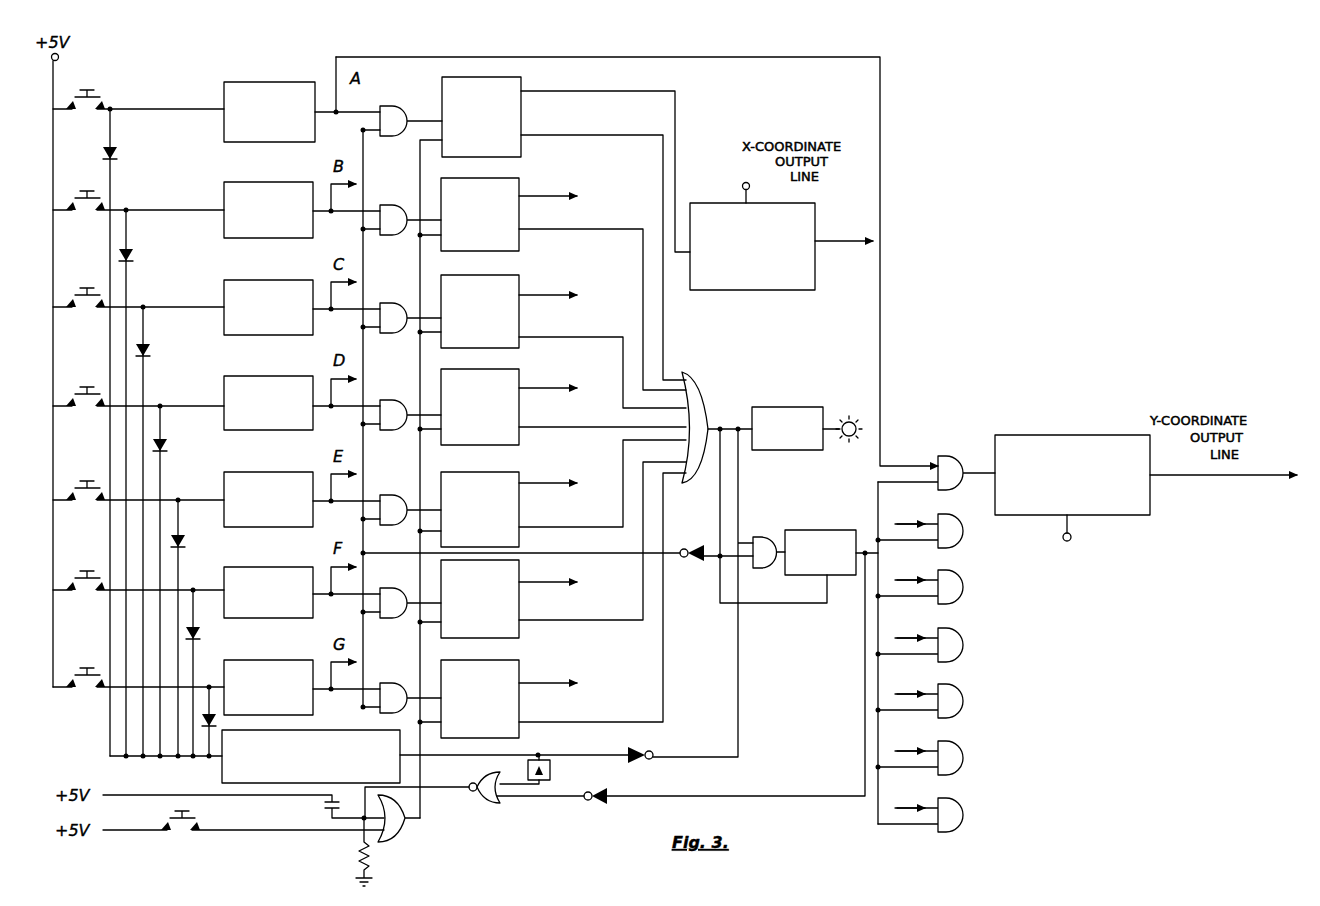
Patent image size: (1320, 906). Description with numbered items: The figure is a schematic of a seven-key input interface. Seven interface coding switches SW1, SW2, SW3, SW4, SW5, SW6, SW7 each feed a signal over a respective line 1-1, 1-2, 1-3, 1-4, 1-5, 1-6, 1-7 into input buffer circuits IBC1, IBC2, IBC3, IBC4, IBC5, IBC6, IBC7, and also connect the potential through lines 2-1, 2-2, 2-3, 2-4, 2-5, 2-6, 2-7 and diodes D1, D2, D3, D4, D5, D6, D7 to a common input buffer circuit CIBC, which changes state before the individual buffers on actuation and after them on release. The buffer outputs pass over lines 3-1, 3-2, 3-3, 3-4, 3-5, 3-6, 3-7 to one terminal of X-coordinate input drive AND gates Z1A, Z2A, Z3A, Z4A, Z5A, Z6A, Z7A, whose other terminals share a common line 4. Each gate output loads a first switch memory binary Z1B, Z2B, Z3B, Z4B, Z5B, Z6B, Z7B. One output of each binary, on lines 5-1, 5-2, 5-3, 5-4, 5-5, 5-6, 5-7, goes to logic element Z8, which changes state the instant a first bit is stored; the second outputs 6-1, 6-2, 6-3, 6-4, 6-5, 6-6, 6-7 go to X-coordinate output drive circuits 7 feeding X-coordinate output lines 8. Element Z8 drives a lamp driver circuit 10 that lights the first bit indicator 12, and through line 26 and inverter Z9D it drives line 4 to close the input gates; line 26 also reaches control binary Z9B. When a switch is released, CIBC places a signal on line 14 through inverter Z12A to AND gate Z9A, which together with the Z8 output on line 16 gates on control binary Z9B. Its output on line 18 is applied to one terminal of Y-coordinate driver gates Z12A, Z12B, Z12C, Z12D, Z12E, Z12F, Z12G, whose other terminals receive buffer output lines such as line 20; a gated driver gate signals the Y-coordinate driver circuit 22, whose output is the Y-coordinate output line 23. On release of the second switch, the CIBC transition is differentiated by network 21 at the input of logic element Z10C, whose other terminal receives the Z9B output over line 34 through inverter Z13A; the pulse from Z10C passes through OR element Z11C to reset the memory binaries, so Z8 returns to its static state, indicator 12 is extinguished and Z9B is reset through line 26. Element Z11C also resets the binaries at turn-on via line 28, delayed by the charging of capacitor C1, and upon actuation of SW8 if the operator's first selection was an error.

The interface coding switch SW1 is at (81, 87).
The interface coding switch SW2 is at (89, 187).
The interface coding switch SW3 is at (98, 284).
The interface coding switch SW4 is at (106, 381).
The interface coding switch SW5 is at (115, 475).
The interface coding switch SW6 is at (123, 565).
The interface coding switch SW7 is at (131, 663).
The reset switch SW8 is at (243, 813).
The switch output line 1-1 is at (156, 106).
The switch output line 1-2 is at (175, 208).
The switch output line 1-3 is at (180, 306).
The switch output line 1-4 is at (180, 405).
The switch output line 1-5 is at (192, 499).
The switch output line 1-6 is at (200, 589).
The switch output line 1-7 is at (212, 684).
The common buffer input line 2-1 is at (110, 178).
The common buffer input line 2-2 is at (126, 280).
The common buffer input line 2-3 is at (144, 364).
The common buffer input line 2-4 is at (160, 460).
The common buffer input line 2-5 is at (178, 511).
The common buffer input line 2-6 is at (193, 597).
The common buffer input line 2-7 is at (217, 695).
The diode D1 is at (118, 152).
The diode D2 is at (132, 255).
The diode D3 is at (148, 348).
The diode D4 is at (166, 442).
The diode D5 is at (182, 548).
The diode D6 is at (197, 637).
The diode D7 is at (213, 709).
The input buffer circuit IBC1 is at (260, 82).
The input buffer circuit IBC2 is at (276, 182).
The input buffer circuit IBC3 is at (260, 280).
The input buffer circuit IBC4 is at (262, 376).
The input buffer circuit IBC5 is at (262, 472).
The input buffer circuit IBC6 is at (262, 567).
The input buffer circuit IBC7 is at (275, 660).
The common input buffer circuit CIBC is at (222, 764).
The buffer output line 3-1 is at (330, 116).
The buffer output line 3-2 is at (334, 216).
The buffer output line 3-3 is at (334, 313).
The buffer output line 3-4 is at (350, 408).
The buffer output line 3-5 is at (334, 504).
The buffer output line 3-6 is at (334, 596).
The buffer output line 3-7 is at (334, 691).
The common line 4 is at (363, 156).
The X-coordinate input drive gate Z1A is at (395, 106).
The X-coordinate input drive gate Z2A is at (392, 202).
The X-coordinate input drive gate Z3A is at (392, 300).
The X-coordinate input drive gate Z4A is at (392, 398).
The X-coordinate input drive gate Z5A is at (392, 494).
The X-coordinate input drive gate Z6A is at (392, 588).
The X-coordinate input drive gate Z7A is at (392, 680).
The first switch memory binary Z1B is at (524, 112).
The first switch memory binary Z2B is at (502, 178).
The first switch memory binary Z3B is at (496, 275).
The first switch memory binary Z4B is at (504, 374).
The first switch memory binary Z5B is at (498, 474).
The first switch memory binary Z6B is at (510, 572).
The first switch memory binary Z7B is at (506, 654).
The memory binary output line 5-1 is at (648, 162).
The memory binary output line 5-2 is at (630, 264).
The memory binary output line 5-3 is at (612, 368).
The memory binary output line 5-4 is at (580, 430).
The memory binary output line 5-5 is at (596, 538).
The memory binary output line 5-6 is at (626, 622).
The memory binary output line 5-7 is at (636, 722).
The second memory binary output 6-1 is at (632, 90).
The second memory binary output 6-2 is at (538, 198).
The second memory binary output 6-3 is at (538, 298).
The second memory binary output 6-4 is at (529, 390).
The second memory binary output 6-5 is at (535, 486).
The second memory binary output 6-6 is at (540, 586).
The second memory binary output 6-7 is at (545, 682).
The X-coordinate output drive circuit 7 is at (784, 288).
The X-coordinate output line 8 is at (836, 218).
The logic element Z8 is at (696, 406).
The lamp driver circuit 10 is at (779, 407).
The first bit indicator 12 is at (842, 416).
The line 16 is at (738, 462).
The line 26 is at (716, 508).
The logic AND gate element Z9A is at (766, 536).
The control binary Z9B is at (810, 576).
The inverter Z9D is at (692, 547).
The control binary output line 18 is at (858, 532).
The line 14 is at (740, 638).
The input buffer output line 20 is at (606, 57).
The delay element 21 is at (555, 770).
The reset line 28 is at (419, 768).
The line 34 is at (825, 796).
The logic element Z10C is at (472, 805).
The logic OR element Z11C is at (402, 835).
The inverter Z13A is at (552, 812).
The capacitor C1 is at (318, 804).
The Y-coordinate driver gate Z12A is at (646, 750).
The Y-coordinate driver gate Z12B is at (954, 535).
The Y-coordinate driver gate Z12C is at (948, 593).
The Y-coordinate driver gate Z12D is at (963, 640).
The Y-coordinate driver gate Z12E is at (960, 707).
The Y-coordinate driver gate Z12F is at (958, 770).
The Y-coordinate driver gate Z12G is at (950, 834).
The Y-coordinate driver circuit 22 is at (1106, 434).
The Y-coordinate output line 23 is at (1246, 476).